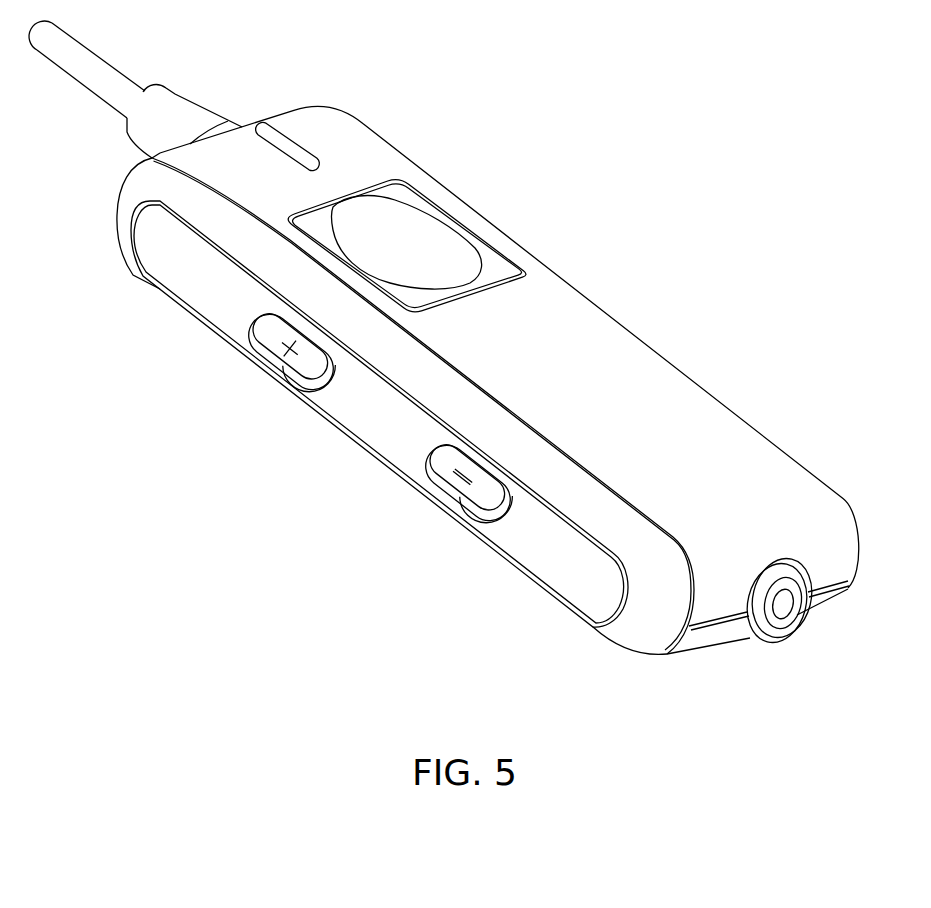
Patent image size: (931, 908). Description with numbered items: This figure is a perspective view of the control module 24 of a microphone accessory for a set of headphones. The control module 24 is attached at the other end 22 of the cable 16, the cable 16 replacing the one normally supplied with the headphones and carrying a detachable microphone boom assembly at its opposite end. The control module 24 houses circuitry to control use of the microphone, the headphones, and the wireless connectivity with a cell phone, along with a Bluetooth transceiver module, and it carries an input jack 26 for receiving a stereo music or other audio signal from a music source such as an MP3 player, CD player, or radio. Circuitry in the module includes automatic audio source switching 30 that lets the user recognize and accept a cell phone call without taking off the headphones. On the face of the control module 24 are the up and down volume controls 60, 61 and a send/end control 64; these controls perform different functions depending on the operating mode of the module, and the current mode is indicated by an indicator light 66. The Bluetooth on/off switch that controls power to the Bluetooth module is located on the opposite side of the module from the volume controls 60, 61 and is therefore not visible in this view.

The cable 16 is at (73, 33).
The other end 22 is at (130, 80).
The control module 24 is at (598, 397).
The input jack 26 is at (788, 605).
The automatic audio source switching 30 is at (490, 290).
The up volume control 60 is at (300, 370).
The down volume control 61 is at (463, 497).
The send/end control 64 is at (430, 228).
The indicator light 66 is at (269, 132).